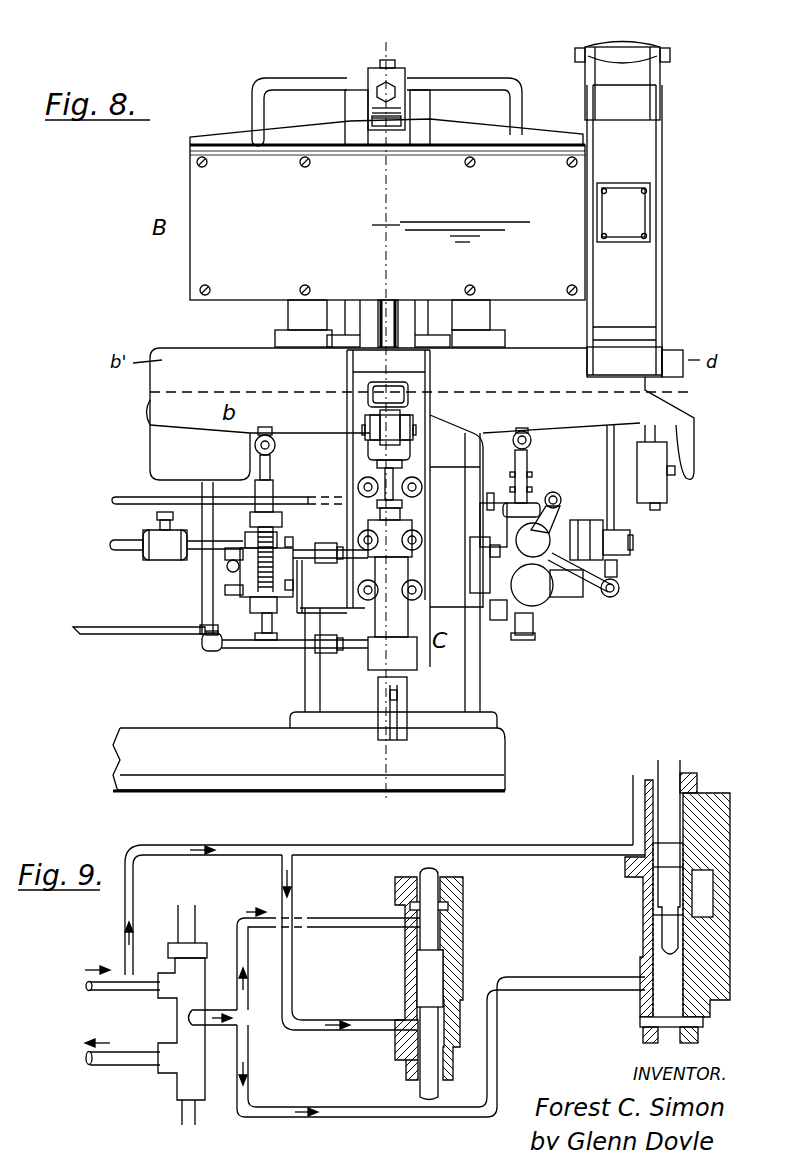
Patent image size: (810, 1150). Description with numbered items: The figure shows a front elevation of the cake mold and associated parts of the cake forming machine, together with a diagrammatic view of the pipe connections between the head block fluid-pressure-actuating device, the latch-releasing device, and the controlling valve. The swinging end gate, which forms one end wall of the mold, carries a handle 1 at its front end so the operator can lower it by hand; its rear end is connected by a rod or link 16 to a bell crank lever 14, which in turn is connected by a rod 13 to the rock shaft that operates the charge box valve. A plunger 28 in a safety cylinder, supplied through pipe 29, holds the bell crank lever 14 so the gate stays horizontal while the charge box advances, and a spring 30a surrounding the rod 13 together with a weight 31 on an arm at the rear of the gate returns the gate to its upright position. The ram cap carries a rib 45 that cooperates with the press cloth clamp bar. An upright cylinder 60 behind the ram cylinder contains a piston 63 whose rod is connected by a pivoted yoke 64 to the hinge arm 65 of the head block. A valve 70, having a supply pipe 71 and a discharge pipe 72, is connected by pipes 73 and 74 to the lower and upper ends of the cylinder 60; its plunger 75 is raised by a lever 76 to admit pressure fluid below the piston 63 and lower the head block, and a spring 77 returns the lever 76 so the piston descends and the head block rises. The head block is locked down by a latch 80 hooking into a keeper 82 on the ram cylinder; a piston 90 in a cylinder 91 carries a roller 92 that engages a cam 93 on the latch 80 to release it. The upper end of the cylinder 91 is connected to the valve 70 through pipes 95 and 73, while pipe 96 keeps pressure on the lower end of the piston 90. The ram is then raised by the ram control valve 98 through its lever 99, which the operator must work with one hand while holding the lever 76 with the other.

In FIG. 8, the handle 1 is at (637, 44).
In FIG. 8, the rod 13 is at (128, 497).
In FIG. 8, the bell crank lever 14 is at (386, 37).
In FIG. 8, the rod or link 16 is at (607, 462).
In FIG. 8, the plunger 28 is at (488, 620).
In FIG. 8, the pipe 29 is at (127, 630).
In FIG. 8, the spring 30a is at (487, 492).
In FIG. 8, the weight 31 is at (656, 467).
In FIG. 8, the rib 45 is at (150, 410).
In FIG. 9, the upright cylinder 60 is at (652, 898).
In FIG. 8, the piston 63 is at (378, 300).
In FIG. 9, the piston 63 is at (667, 810).
In FIG. 8, the pivoted yoke 64 is at (343, 318).
In FIG. 8, the hinge arm 65 is at (290, 318).
In FIG. 8, the valve 70 is at (270, 600).
In FIG. 9, the valve 70 is at (178, 1080).
In FIG. 8, the liquid supply pipe 71 is at (130, 540).
In FIG. 9, the liquid supply pipe 71 is at (110, 990).
In FIG. 8, the discharge pipe 72 is at (225, 591).
In FIG. 9, the discharge pipe 72 is at (112, 1058).
In FIG. 8, the pipe 73 is at (228, 560).
In FIG. 9, the pipe 73 is at (222, 1028).
In FIG. 8, the pipe 74 is at (253, 466).
In FIG. 9, the pipe 74 is at (289, 953).
In FIG. 8, the valve plunger 75 is at (275, 489).
In FIG. 8, the lever 76 is at (270, 435).
In FIG. 8, the spring 77 is at (258, 585).
In FIG. 8, the latch 80 is at (405, 76).
In FIG. 8, the keeper 82 is at (430, 391).
In FIG. 8, the piston 90 is at (397, 472).
In FIG. 9, the piston 90 is at (430, 978).
In FIG. 8, the cylinder 91 is at (390, 648).
In FIG. 9, the cylinder 91 is at (452, 957).
In FIG. 8, the roller 92 is at (398, 418).
In FIG. 8, the cam 93 is at (393, 128).
In FIG. 8, the pipe 95 is at (305, 560).
In FIG. 9, the pipe 95 is at (356, 918).
In FIG. 8, the pipe 96 is at (292, 650).
In FIG. 9, the pipe 96 is at (362, 1020).
In FIG. 8, the ram control valve 98 is at (540, 610).
In FIG. 8, the operating lever 99 is at (531, 431).